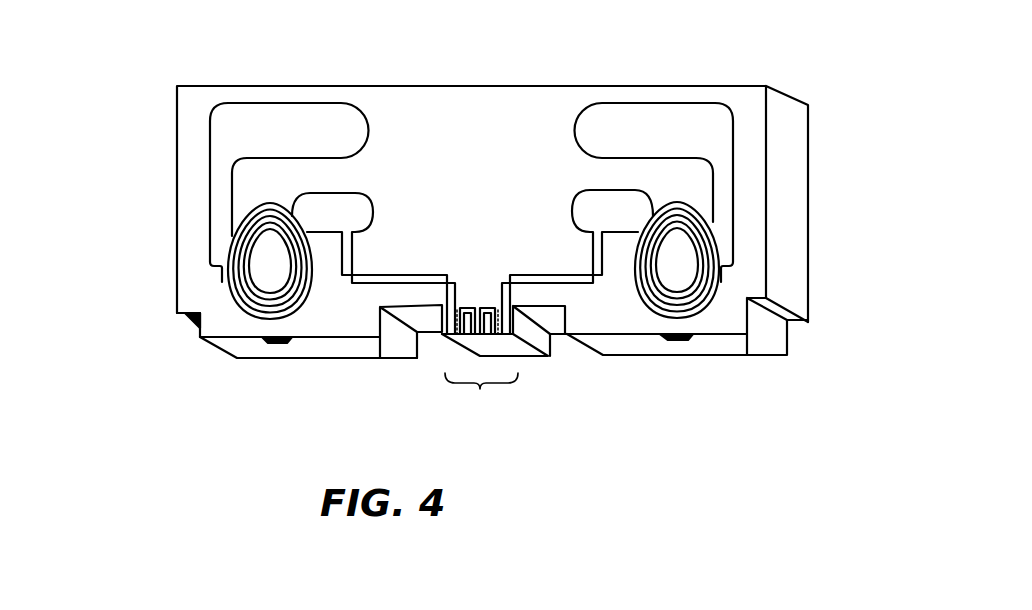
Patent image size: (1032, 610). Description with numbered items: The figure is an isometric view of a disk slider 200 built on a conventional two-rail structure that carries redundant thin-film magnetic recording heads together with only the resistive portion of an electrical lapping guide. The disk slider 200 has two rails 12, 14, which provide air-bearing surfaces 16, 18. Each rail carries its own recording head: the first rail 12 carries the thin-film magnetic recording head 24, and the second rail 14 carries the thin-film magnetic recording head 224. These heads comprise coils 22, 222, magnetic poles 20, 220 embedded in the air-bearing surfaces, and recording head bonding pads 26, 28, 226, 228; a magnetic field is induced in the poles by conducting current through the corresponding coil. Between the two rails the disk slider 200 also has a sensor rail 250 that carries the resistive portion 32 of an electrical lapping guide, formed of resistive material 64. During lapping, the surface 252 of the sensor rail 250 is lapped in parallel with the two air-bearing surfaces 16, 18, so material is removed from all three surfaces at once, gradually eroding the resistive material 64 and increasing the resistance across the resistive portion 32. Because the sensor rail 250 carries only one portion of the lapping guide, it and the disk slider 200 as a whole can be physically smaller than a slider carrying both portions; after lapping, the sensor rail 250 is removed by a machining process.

The disk slider 200 is at (497, 33).
The recording head bonding pad 26 is at (366, 122).
The recording head bonding pad 226 is at (577, 124).
The recording head bonding pad 28 is at (362, 207).
The recording head bonding pad 228 is at (575, 205).
The thin-film magnetic recording head 24 is at (210, 269).
The thin-film magnetic recording head 224 is at (733, 270).
The coil 22 is at (305, 297).
The coil 222 is at (638, 270).
The resistive material 64 is at (495, 300).
The rail 12 is at (201, 335).
The rail 14 is at (779, 335).
The air-bearing surface 16 is at (373, 350).
The air-bearing surface 18 is at (757, 350).
The magnetic poles 20 is at (278, 343).
The magnetic poles 220 is at (683, 340).
The resistive portion 32 is at (481, 400).
The sensor rail 250 is at (552, 347).
The surface 252 is at (527, 353).